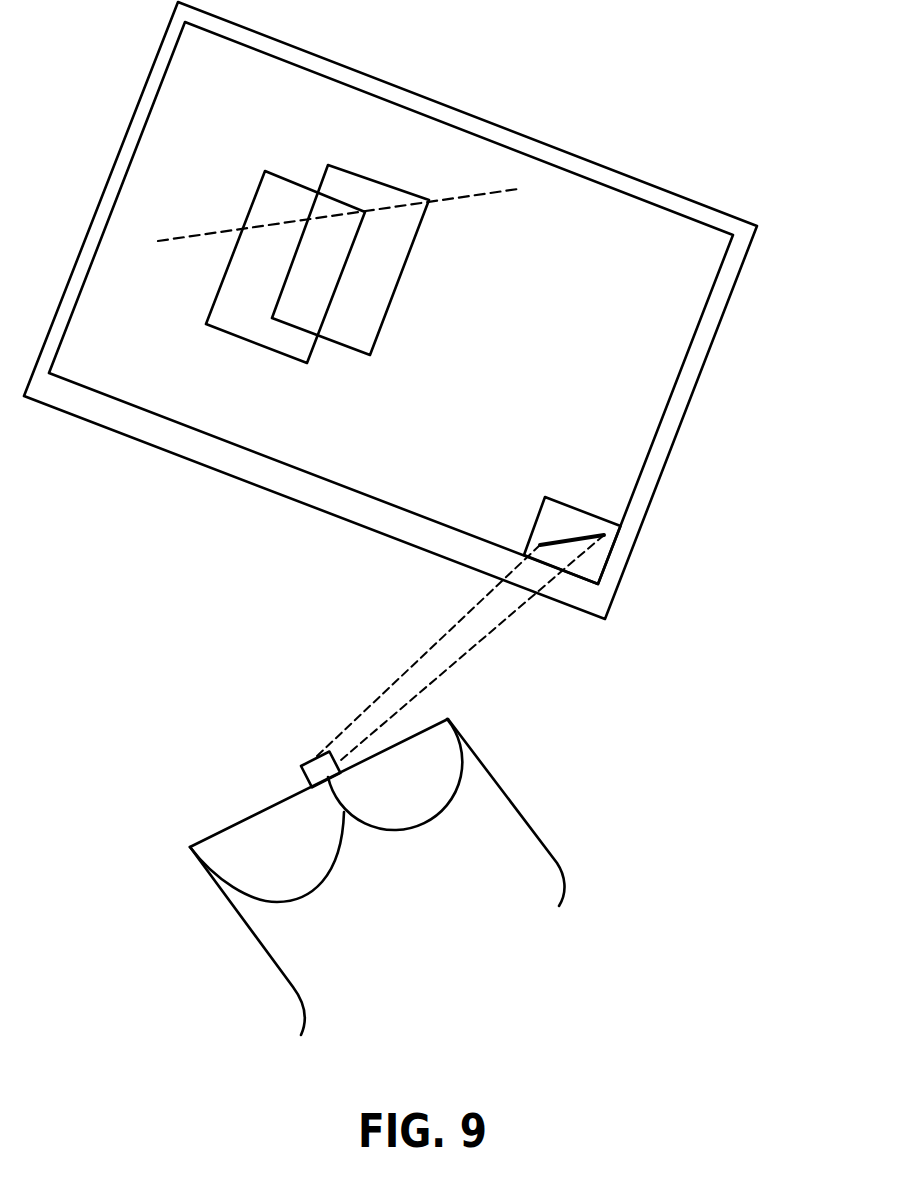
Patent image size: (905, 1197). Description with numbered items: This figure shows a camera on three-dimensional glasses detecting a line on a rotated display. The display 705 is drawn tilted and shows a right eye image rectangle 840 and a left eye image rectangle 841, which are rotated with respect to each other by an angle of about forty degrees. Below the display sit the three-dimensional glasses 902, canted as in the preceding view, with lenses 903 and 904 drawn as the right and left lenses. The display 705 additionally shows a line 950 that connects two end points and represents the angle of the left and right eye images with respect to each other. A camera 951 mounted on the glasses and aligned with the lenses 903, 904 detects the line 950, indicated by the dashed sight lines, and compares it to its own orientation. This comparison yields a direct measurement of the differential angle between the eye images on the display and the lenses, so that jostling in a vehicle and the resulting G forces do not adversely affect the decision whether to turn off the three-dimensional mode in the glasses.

The display 705 is at (743, 265).
The right eye image rectangle 840 is at (365, 212).
The left eye image rectangle 841 is at (430, 202).
The line 950 is at (597, 537).
The camera 951 is at (320, 758).
The 3D glasses 902 is at (478, 757).
The lens 903 is at (445, 807).
The lens 904 is at (330, 878).